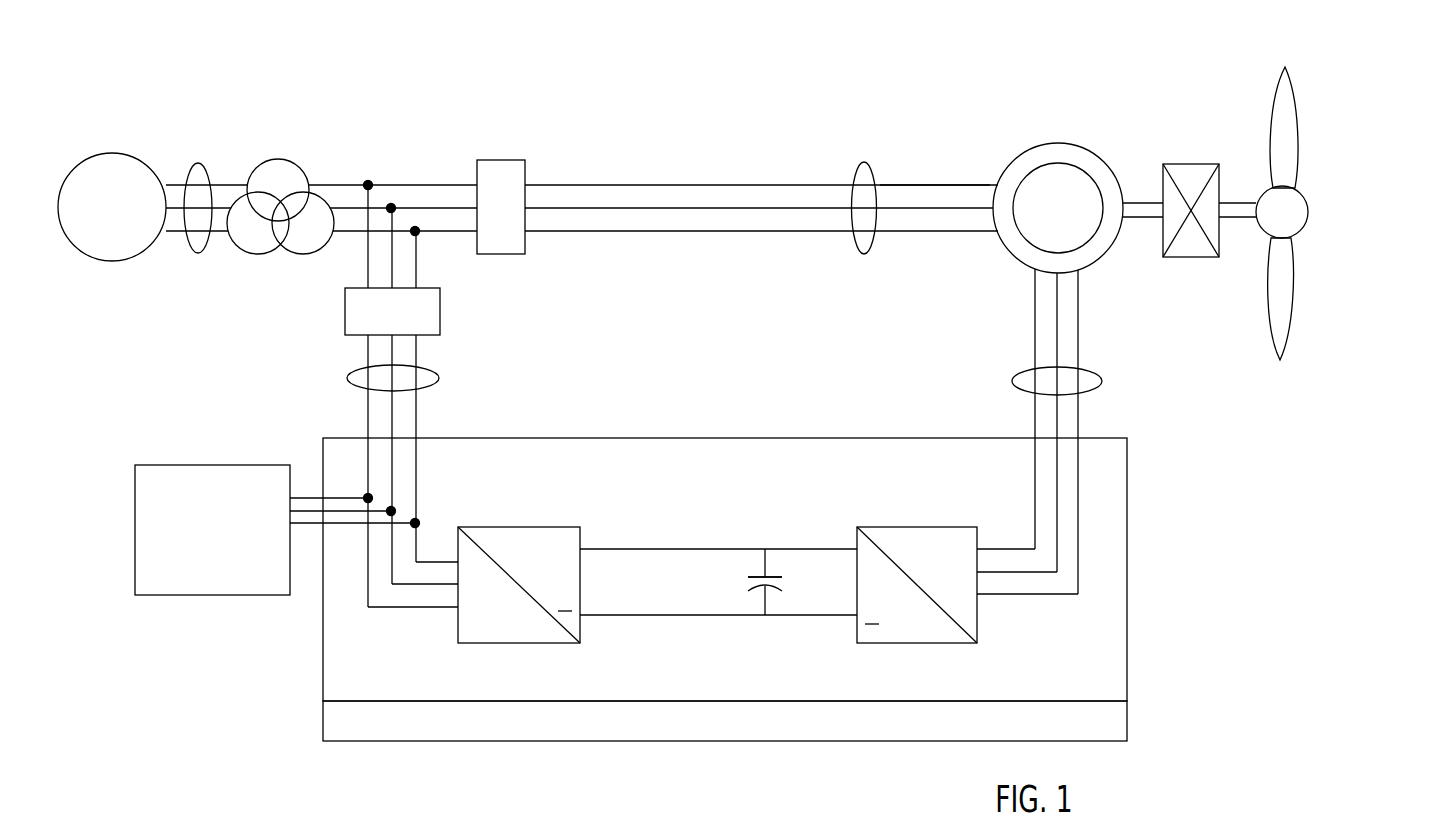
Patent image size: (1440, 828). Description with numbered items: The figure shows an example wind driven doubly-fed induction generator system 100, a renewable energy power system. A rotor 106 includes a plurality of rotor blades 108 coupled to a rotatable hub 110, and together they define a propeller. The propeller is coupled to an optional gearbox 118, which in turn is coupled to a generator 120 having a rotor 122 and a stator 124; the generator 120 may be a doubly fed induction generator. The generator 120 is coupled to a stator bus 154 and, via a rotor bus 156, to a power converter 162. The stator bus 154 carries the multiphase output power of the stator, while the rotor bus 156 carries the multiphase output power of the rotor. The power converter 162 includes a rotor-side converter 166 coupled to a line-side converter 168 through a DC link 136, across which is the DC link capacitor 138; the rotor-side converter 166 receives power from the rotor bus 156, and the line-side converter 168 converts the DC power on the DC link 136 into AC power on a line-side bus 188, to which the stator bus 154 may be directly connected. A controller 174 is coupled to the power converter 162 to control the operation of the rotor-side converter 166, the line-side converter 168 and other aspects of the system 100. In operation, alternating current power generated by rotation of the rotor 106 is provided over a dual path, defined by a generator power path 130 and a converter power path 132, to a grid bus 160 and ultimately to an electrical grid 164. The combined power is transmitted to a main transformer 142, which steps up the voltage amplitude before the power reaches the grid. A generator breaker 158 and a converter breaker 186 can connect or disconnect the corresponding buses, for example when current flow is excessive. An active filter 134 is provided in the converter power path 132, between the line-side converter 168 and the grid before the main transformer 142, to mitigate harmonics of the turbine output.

The wind driven doubly-fed induction generator system 100 is at (667, 125).
The rotor 106 is at (1342, 208).
The rotor blades 108 is at (1297, 140).
The rotatable hub 110 is at (1310, 210).
The gearbox 118 is at (1195, 164).
The generator 120 is at (1077, 173).
The rotor 122 is at (1097, 180).
The stator 124 is at (1023, 153).
The generator power path 130 is at (948, 185).
The converter power path 132 is at (1086, 298).
The active filter 134 is at (229, 575).
The DC link 136 is at (775, 549).
The DC link capacitor 138 is at (753, 577).
The main transformer 142 is at (281, 159).
The stator bus 154 is at (864, 162).
The rotor bus 156 is at (1102, 378).
The generator breaker 158 is at (500, 160).
The grid bus 160 is at (198, 163).
The power converter 162 is at (759, 569).
The electrical grid 164 is at (93, 221).
The rotor-side converter 166 is at (977, 618).
The line-side converter 168 is at (458, 632).
The controller 174 is at (1127, 704).
The converter breaker 186 is at (345, 305).
The line-side bus 188 is at (347, 378).